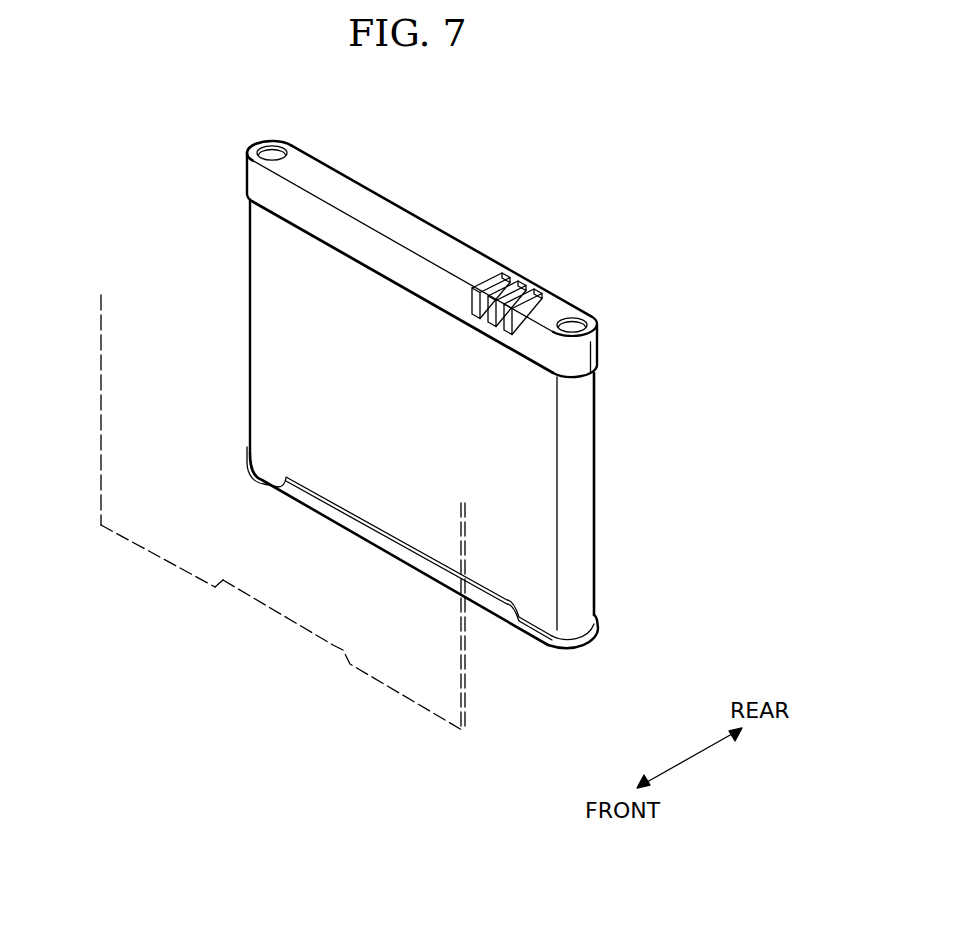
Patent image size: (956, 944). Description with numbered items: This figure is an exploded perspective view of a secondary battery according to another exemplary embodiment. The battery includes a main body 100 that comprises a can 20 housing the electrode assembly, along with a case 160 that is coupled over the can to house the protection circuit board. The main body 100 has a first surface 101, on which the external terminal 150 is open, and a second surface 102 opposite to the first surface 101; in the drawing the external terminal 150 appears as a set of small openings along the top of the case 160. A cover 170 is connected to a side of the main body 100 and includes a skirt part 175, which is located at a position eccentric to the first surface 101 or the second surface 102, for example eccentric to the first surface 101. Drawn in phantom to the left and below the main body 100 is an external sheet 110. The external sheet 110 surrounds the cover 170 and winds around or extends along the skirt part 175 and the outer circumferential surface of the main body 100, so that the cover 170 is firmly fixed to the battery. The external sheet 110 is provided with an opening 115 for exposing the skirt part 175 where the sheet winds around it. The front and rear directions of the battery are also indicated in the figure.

The can 20 is at (474, 437).
The main body 100 is at (594, 501).
The first surface 101 is at (555, 505).
The second surface 102 is at (594, 495).
The external sheet 110 is at (283, 534).
The opening 115 is at (221, 583).
The external terminal 150 is at (516, 291).
The case 160 is at (411, 216).
The cover 170 is at (450, 590).
The skirt part 175 is at (402, 545).